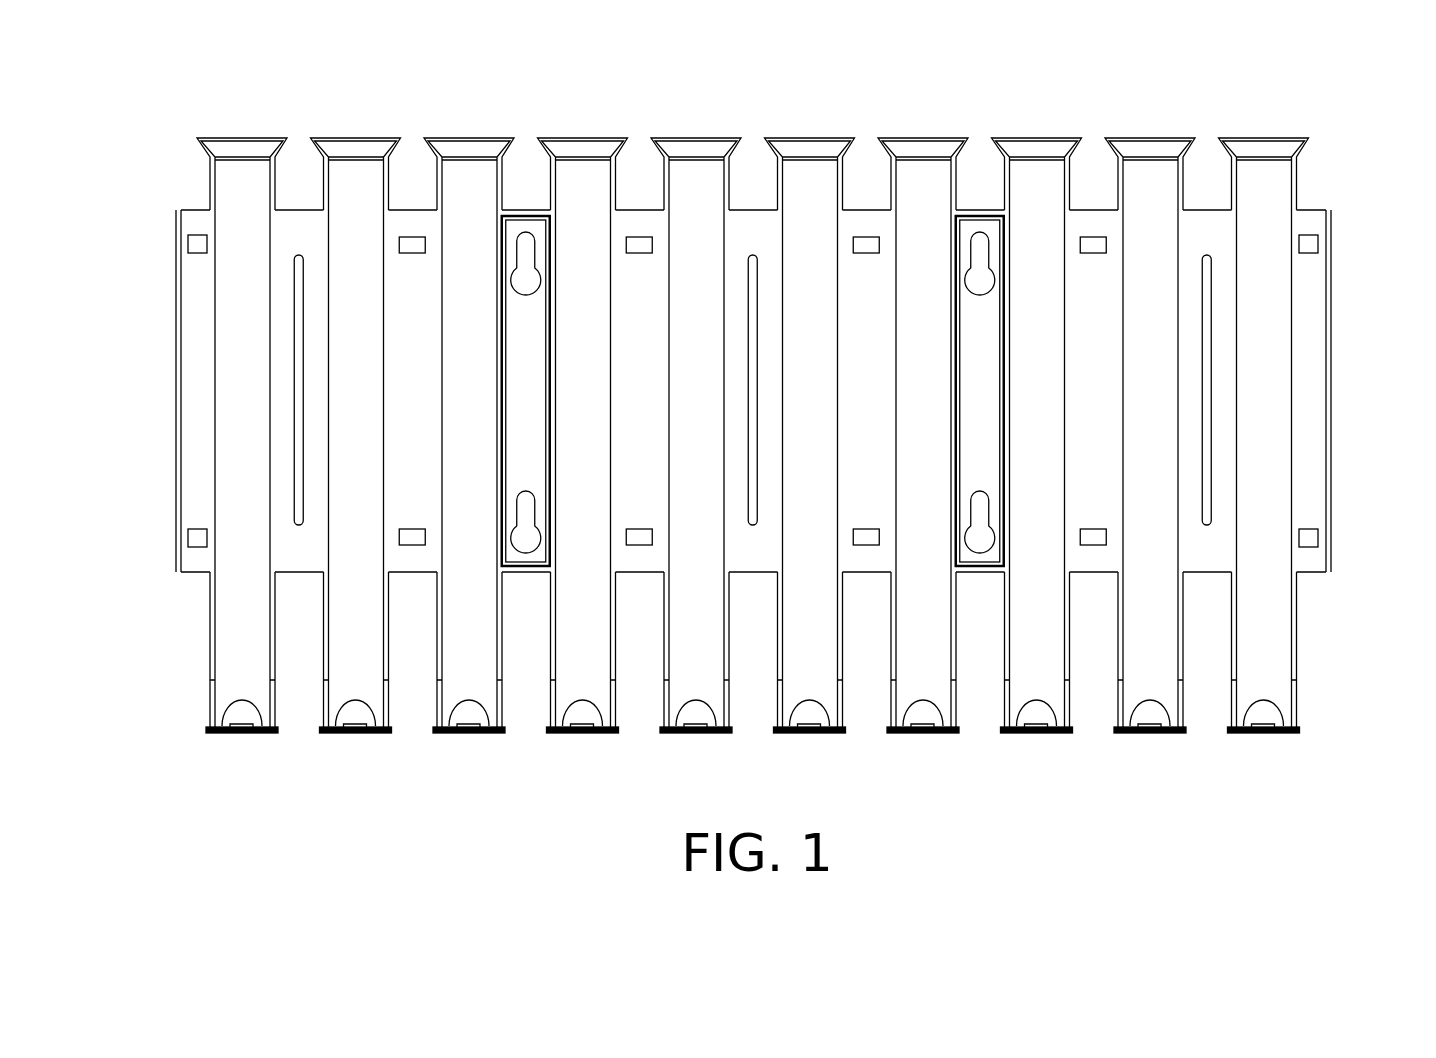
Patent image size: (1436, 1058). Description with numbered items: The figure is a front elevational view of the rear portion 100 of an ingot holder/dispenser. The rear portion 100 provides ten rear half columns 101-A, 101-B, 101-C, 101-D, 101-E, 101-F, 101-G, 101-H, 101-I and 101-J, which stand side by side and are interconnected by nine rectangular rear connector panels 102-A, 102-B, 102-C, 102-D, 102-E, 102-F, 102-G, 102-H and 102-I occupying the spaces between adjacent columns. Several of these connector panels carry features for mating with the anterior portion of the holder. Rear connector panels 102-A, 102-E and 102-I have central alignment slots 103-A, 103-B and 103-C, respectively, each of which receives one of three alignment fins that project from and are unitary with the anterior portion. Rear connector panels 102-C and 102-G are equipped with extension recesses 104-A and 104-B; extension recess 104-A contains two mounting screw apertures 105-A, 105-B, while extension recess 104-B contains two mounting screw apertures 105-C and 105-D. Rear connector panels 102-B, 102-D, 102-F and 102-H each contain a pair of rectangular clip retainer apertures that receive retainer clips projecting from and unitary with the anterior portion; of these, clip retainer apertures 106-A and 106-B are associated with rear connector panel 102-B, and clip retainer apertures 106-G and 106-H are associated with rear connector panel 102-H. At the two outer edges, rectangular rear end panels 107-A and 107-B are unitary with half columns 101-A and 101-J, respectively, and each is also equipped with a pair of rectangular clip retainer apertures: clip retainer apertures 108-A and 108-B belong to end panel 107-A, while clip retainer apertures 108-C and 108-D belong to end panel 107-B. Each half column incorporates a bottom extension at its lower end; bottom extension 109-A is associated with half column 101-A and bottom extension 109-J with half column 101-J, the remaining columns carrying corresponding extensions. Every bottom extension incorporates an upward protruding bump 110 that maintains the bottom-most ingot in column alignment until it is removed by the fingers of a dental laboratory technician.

The rear portion 100 is at (180, 115).
The rear half column 101-A is at (232, 190).
The rear half column 101-B is at (346, 192).
The rear half column 101-C is at (460, 192).
The rear half column 101-D is at (574, 192).
The rear half column 101-E is at (687, 192).
The rear half column 101-F is at (800, 192).
The rear half column 101-G is at (914, 192).
The rear half column 101-H is at (1028, 192).
The rear half column 101-I is at (1141, 192).
The rear half column 101-J is at (1254, 192).
The rear connector panel 102-A is at (299, 566).
The rear connector panel 102-B is at (412, 566).
The rear connector panel 102-C is at (526, 566).
The rear connector panel 102-D is at (639, 566).
The rear connector panel 102-E is at (753, 566).
The rear connector panel 102-F is at (866, 566).
The rear connector panel 102-G is at (980, 566).
The rear connector panel 102-H is at (1093, 566).
The rear connector panel 102-I is at (1207, 566).
The central alignment slot 103-A is at (292, 330).
The central alignment slot 103-B is at (746, 425).
The central alignment slot 103-C is at (1213, 330).
The extension recess 104-A is at (522, 400).
The extension recess 104-B is at (982, 398).
The mounting screw aperture 105-A is at (514, 252).
The mounting screw aperture 105-B is at (514, 508).
The mounting screw aperture 105-C is at (991, 252).
The mounting screw aperture 105-D is at (991, 508).
The clip retainer aperture 106-A is at (397, 243).
The clip retainer aperture 106-B is at (397, 541).
The clip retainer aperture 106-G is at (1108, 243).
The clip retainer aperture 106-H is at (1108, 541).
The rear end panel 107-A is at (195, 375).
The rear end panel 107-B is at (1310, 375).
The clip retainer aperture 108-A is at (186, 243).
The clip retainer aperture 108-B is at (186, 540).
The clip retainer aperture 108-C is at (1320, 243).
The clip retainer aperture 108-D is at (1320, 540).
The bottom extension 109-A is at (232, 734).
The bottom extension 109-J is at (1265, 735).
The upward protruding bump 110 is at (243, 720).